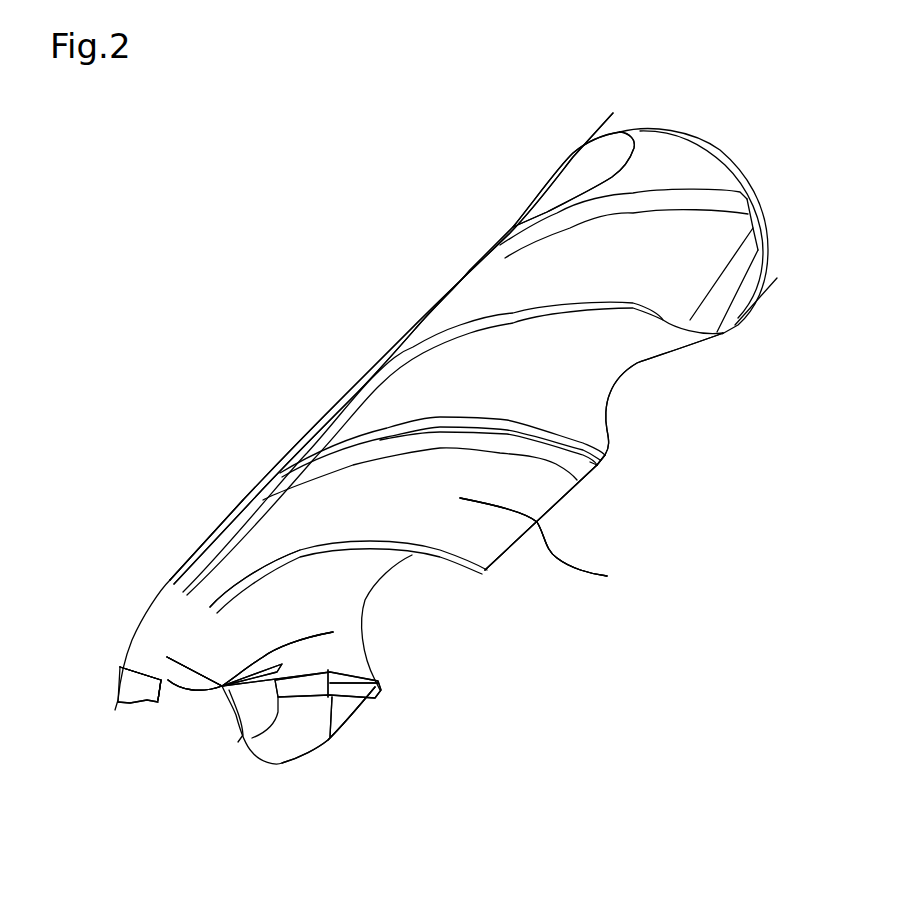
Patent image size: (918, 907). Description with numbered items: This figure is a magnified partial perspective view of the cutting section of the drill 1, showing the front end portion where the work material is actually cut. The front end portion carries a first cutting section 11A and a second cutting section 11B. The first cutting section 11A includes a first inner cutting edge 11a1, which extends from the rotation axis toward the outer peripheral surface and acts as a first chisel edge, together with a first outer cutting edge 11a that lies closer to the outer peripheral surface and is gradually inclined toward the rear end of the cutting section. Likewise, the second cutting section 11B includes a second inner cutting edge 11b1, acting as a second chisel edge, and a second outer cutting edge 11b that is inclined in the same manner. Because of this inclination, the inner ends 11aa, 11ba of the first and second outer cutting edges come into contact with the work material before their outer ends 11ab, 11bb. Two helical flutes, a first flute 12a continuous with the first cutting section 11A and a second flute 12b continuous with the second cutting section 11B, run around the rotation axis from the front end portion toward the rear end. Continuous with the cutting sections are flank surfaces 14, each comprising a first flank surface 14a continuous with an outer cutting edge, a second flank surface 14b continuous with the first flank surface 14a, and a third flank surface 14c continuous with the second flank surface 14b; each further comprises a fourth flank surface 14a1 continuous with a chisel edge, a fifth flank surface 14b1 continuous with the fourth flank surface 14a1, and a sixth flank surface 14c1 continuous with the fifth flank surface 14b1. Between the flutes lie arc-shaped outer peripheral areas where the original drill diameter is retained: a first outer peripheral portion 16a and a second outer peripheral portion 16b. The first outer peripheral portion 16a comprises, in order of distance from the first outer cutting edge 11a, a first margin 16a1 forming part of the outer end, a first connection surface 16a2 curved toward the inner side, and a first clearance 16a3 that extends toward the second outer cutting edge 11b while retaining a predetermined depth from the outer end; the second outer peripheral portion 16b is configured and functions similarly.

The drill 1 is at (250, 238).
The first flute 12a is at (597, 163).
The second flute 12b is at (567, 372).
The flank surfaces 14 is at (218, 667).
The first flank surface 14a is at (128, 683).
The fourth flank surface 14a1 is at (166, 618).
The second flank surface 14b is at (190, 652).
The fifth flank surface 14b1 is at (188, 618).
The third flank surface 14c is at (205, 597).
The sixth flank surface 14c1 is at (231, 636).
The first outer peripheral portion 16a is at (636, 536).
The first margin 16a1 is at (597, 465).
The first connection surface 16a2 is at (577, 480).
The first clearance 16a3 is at (607, 576).
The second outer peripheral portion 16b is at (391, 346).
The first outer cutting edge 11a is at (432, 680).
The first inner cutting edge 11a1 is at (333, 632).
The inner end of the first outer cutting edge 11aa is at (380, 697).
The outer end of the first outer cutting edge 11ab is at (372, 657).
The first cutting section 11A is at (447, 676).
The second outer cutting edge 11b is at (94, 748).
The second inner cutting edge 11b1 is at (197, 693).
The inner end of the second outer cutting edge 11ba is at (158, 702).
The outer end of the second outer cutting edge 11bb is at (118, 702).
The second cutting section 11B is at (140, 768).